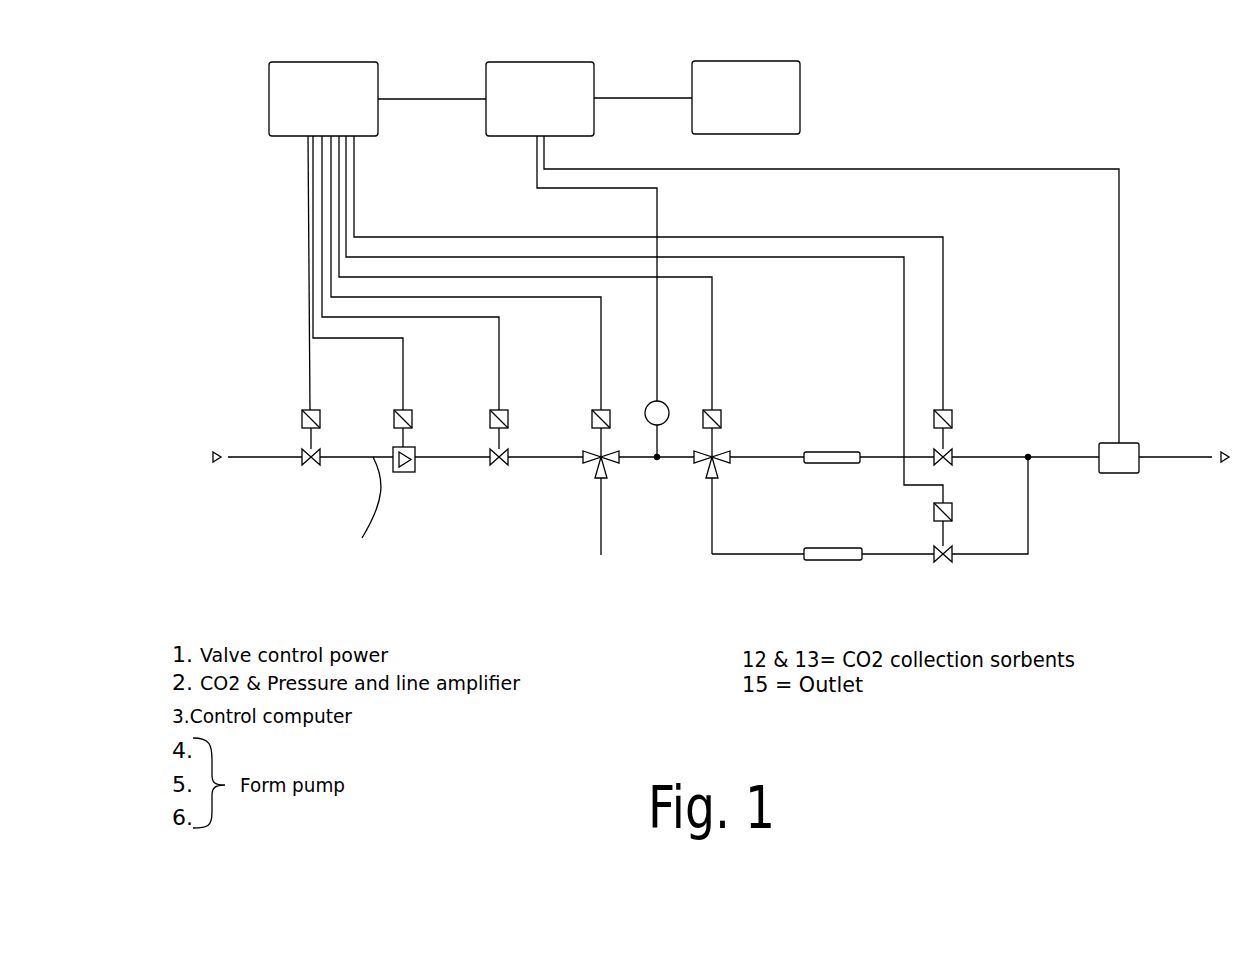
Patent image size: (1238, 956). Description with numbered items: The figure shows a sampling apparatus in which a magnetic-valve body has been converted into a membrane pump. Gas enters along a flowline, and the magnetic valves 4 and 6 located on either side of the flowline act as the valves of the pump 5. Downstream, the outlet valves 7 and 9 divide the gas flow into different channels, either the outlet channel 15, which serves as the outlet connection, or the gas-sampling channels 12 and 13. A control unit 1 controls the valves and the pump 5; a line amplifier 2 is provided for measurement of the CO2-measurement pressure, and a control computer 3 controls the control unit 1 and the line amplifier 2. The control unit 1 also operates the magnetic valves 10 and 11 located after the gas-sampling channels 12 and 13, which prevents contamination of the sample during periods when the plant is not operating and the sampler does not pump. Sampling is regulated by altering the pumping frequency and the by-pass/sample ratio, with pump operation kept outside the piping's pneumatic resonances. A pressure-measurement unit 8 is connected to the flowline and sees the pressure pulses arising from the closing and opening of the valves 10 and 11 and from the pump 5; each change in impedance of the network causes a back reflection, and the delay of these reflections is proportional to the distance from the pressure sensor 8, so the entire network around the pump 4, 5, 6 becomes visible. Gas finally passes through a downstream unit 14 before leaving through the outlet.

The control unit 1 is at (323, 87).
The line amplifier 2 is at (540, 87).
The control computer 3 is at (746, 86).
The magnetic valve 4 is at (306, 428).
The pump 5 is at (400, 431).
The magnetic valve 6 is at (494, 428).
The outlet valve 7 is at (601, 434).
The pressure-measurement unit 8 is at (650, 424).
The outlet valve 9 is at (710, 472).
The magnetic valve 10 is at (935, 428).
The magnetic valve 11 is at (934, 527).
The gas-sampling channel 12 is at (832, 449).
The gas-sampling channel 13 is at (833, 546).
The outlet device 14 is at (1114, 449).
The outlet channel 15 is at (588, 519).